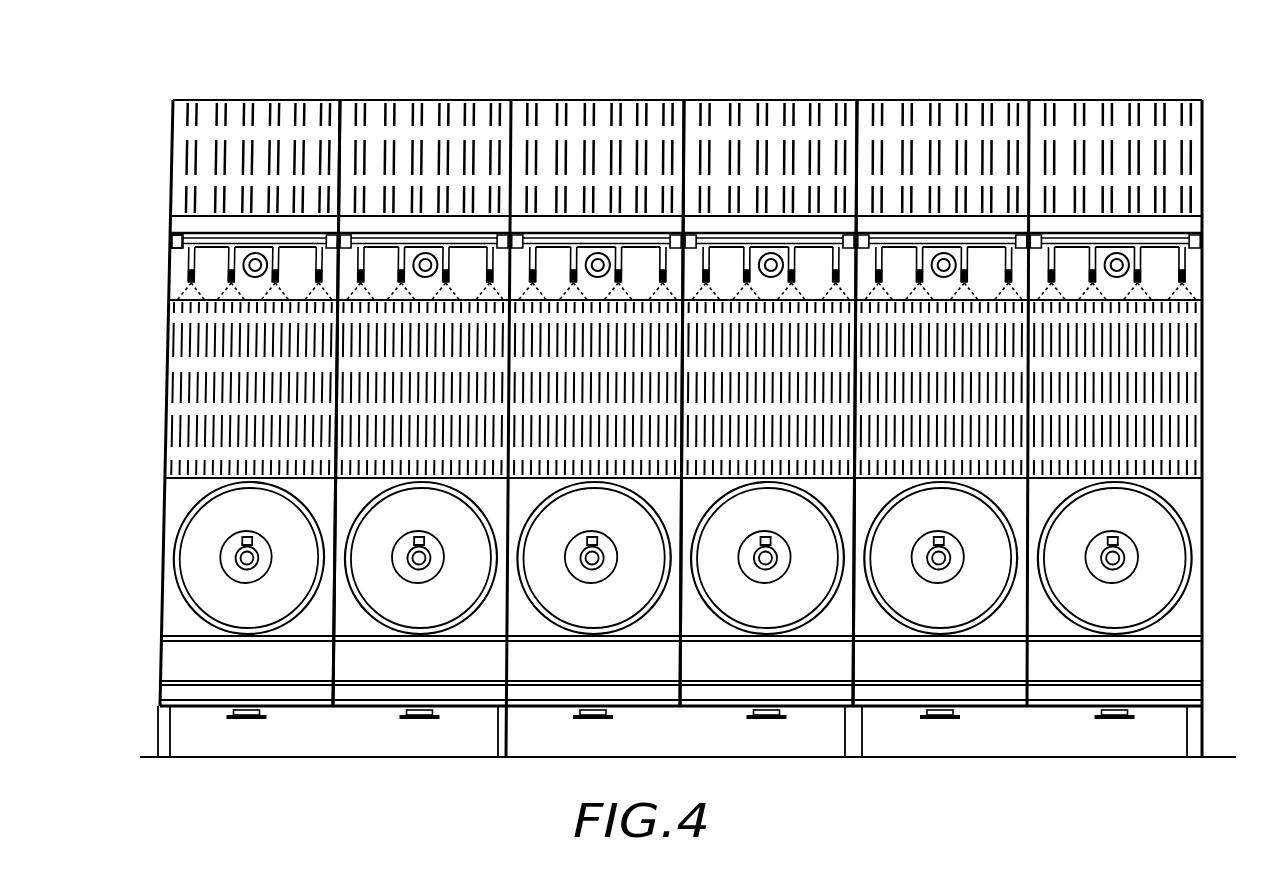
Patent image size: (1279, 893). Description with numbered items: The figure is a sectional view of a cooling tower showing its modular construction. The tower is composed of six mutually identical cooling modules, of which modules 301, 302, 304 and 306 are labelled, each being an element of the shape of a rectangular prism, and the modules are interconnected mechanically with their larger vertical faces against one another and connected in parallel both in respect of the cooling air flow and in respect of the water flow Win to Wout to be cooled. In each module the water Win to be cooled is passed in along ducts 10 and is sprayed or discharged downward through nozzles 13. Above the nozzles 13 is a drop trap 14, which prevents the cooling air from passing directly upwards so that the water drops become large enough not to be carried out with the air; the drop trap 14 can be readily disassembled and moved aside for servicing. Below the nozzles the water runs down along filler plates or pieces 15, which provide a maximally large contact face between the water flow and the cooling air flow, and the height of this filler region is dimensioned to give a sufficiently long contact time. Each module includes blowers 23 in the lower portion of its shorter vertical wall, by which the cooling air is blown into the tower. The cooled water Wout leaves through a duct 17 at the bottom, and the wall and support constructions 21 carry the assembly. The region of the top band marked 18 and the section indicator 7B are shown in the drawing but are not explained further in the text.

The cooling module 301 is at (260, 112).
The cooling module 302 is at (441, 112).
The cooling module 304 is at (765, 112).
The cooling module 306 is at (1093, 112).
The drift eliminators 18 is at (178, 163).
The drop trap 14 is at (165, 237).
The nozzles 13 is at (180, 263).
The ducts 10 is at (1124, 260).
The filler plates and/or pieces 15 is at (172, 362).
The blowers 23 is at (177, 563).
The wall and support constructions 21 is at (157, 737).
The duct 17 is at (233, 720).
The section view indicator 7B is at (327, 398).
The water to be cooled Win is at (106, 262).
The cooled water Wout is at (252, 722).